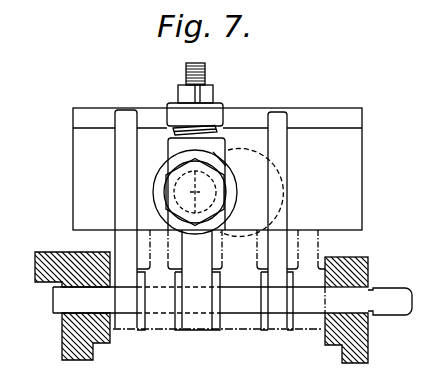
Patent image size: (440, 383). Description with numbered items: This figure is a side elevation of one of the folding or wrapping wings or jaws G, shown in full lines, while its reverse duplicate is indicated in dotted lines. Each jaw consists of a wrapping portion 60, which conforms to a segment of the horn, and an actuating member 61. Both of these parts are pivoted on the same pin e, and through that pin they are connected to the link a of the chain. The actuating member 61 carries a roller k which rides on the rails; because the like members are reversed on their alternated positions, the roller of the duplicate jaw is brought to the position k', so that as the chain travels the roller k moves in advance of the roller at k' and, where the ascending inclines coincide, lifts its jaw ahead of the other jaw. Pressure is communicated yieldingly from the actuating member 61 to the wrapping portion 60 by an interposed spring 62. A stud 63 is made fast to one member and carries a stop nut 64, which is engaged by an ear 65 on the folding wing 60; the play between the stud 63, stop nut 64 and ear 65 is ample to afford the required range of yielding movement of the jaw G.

The wrapping portion 60 is at (217, 219).
The actuating member 61 is at (198, 322).
The spring 62 is at (173, 132).
The stud 63 is at (186, 71).
The stop nut 64 is at (212, 90).
The ear 65 is at (222, 108).
The folding wing or jaw G is at (228, 152).
The roller k is at (202, 192).
The roller position k' is at (274, 191).
The pin e is at (236, 295).
The link a is at (363, 329).